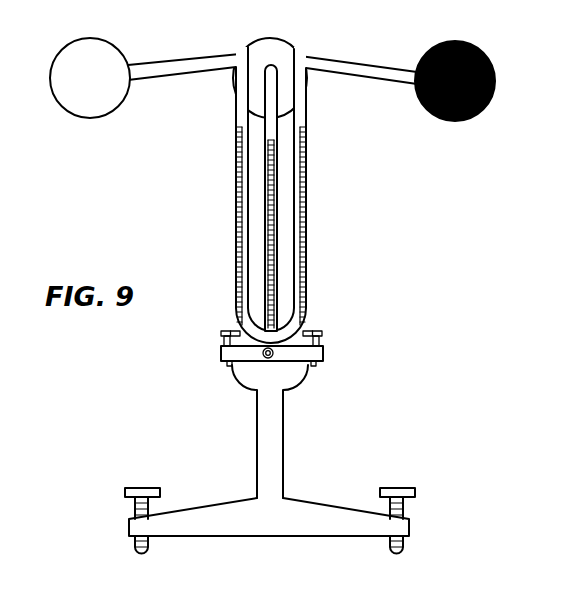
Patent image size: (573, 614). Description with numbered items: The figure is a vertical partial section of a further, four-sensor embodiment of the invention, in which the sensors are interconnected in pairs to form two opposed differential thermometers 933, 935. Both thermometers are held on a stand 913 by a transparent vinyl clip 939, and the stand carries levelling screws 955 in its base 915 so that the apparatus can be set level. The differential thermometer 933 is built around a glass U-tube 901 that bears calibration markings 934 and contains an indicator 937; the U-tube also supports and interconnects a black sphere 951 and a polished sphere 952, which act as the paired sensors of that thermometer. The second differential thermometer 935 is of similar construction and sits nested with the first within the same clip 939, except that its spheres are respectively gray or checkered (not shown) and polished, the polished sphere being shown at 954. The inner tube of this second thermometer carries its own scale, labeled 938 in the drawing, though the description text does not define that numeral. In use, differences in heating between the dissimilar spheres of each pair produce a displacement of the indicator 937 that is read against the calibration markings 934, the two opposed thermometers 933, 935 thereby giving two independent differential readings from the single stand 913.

The glass U-tube 901 is at (263, 195).
The stand 913 is at (285, 422).
The base 915 is at (317, 503).
The differential thermometer 933 is at (372, 116).
The left leg of U-tube 934 is at (235, 157).
The differential thermometer 935 is at (311, 198).
The indicator 937 is at (303, 235).
The scale on inner tube 938 is at (272, 193).
The transparent vinyl clip 939 is at (324, 343).
The black sphere 951 is at (496, 79).
The polished sphere 952 is at (85, 38).
The polished sphere 954 is at (278, 40).
The levelling screws 955 is at (145, 488).